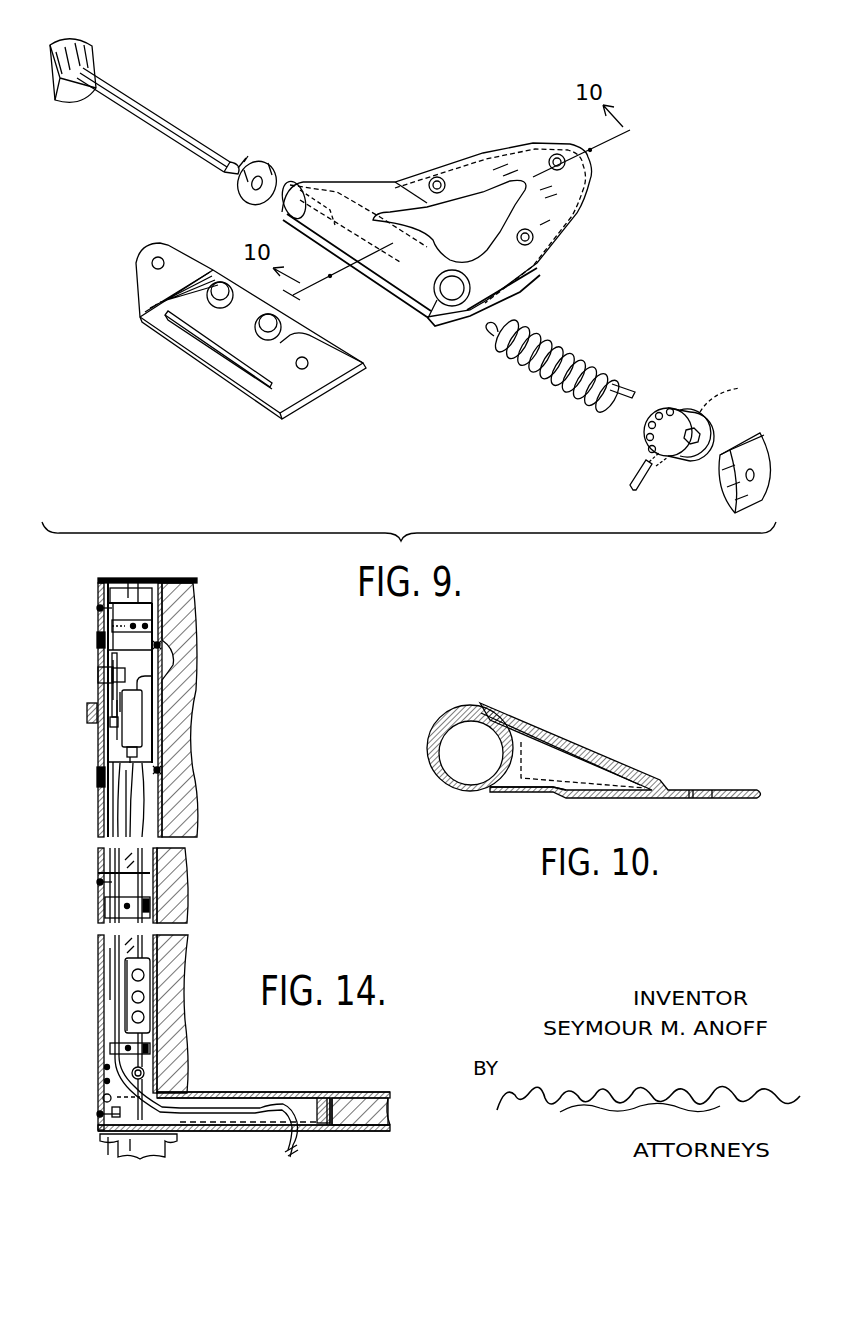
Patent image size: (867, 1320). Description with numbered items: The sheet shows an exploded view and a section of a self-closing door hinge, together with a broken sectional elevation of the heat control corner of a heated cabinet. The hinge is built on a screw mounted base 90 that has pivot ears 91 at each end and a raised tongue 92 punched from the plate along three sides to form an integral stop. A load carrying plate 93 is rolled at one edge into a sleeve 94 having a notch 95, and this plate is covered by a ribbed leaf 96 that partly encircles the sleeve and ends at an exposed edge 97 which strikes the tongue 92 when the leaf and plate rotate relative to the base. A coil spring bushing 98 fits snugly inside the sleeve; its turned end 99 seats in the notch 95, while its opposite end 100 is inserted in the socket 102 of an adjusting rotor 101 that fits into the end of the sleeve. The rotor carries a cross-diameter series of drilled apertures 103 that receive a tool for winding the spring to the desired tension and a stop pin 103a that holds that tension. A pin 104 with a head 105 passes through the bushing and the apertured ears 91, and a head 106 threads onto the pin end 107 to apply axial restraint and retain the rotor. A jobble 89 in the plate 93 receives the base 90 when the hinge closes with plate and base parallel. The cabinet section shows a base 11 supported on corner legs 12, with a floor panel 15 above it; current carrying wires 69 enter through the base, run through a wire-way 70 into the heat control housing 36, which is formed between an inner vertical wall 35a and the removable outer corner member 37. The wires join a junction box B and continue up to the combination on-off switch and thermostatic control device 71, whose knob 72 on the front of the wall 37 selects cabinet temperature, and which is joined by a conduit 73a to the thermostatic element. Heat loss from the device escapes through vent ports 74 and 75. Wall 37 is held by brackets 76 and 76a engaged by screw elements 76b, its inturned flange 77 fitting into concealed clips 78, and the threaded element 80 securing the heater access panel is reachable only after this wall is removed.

In FIG. 9, the head 105 is at (88, 44).
In FIG. 9, the pin 104 is at (160, 108).
In FIG. 9, the end of the pin 107 is at (236, 152).
In FIG. 9, the ribbed leaf 96 is at (592, 184).
In FIG. 10, the ribbed leaf 96 is at (594, 752).
In FIG. 9, the edge 97 is at (385, 292).
In FIG. 10, the edge 97 is at (433, 730).
In FIG. 9, the notch 95 is at (322, 242).
In FIG. 9, the sleeve 94 is at (445, 322).
In FIG. 10, the sleeve 94 is at (433, 762).
In FIG. 9, the load carrying plate 93 is at (518, 299).
In FIG. 10, the load carrying plate 93 is at (645, 798).
In FIG. 9, the screw mounted base 90 is at (244, 315).
In FIG. 9, the pivot ears 91 is at (348, 356).
In FIG. 9, the raised tongue 92 is at (240, 372).
In FIG. 9, the coil spring bushing 98 is at (580, 340).
In FIG. 9, the end of spring bushing 99 is at (485, 340).
In FIG. 9, the opposite end of bushing 100 is at (636, 378).
In FIG. 9, the adjusting rotor 101 is at (683, 429).
In FIG. 9, the socket 102 is at (737, 394).
In FIG. 9, the apertures 103 is at (648, 437).
In FIG. 9, the stop pin 103a is at (642, 487).
In FIG. 9, the head 106 is at (746, 500).
In FIG. 10, the jobble 89 is at (556, 794).
In FIG. 14, the heat control housing 36 is at (137, 837).
In FIG. 14, the outer corner member 37 is at (125, 998).
In FIG. 14, the brackets 76 is at (163, 612).
In FIG. 14, the brackets 76a is at (103, 1098).
In FIG. 14, the screw elements 76b is at (99, 606).
In FIG. 14, the inturned flange 77 is at (120, 593).
In FIG. 14, the clips 78 is at (111, 621).
In FIG. 14, the vent port 75 is at (100, 640).
In FIG. 14, the vent port 74 is at (98, 778).
In FIG. 14, the conduit 73a is at (161, 647).
In FIG. 14, the inner vertical wall 35a is at (153, 688).
In FIG. 14, the combination on-off switch and thermostatic control device 71 is at (135, 716).
In FIG. 14, the knob 72 is at (87, 727).
In FIG. 14, the threaded element 80 is at (104, 1081).
In FIG. 14, the junction box B is at (148, 985).
In FIG. 14, the base 11 is at (383, 1143).
In FIG. 14, the cabinet floor panel 15 is at (360, 1092).
In FIG. 14, the wire-way 70 is at (323, 1092).
In FIG. 14, the current carrying wires 69 is at (302, 1140).
In FIG. 14, the corner legs 12 is at (177, 1142).